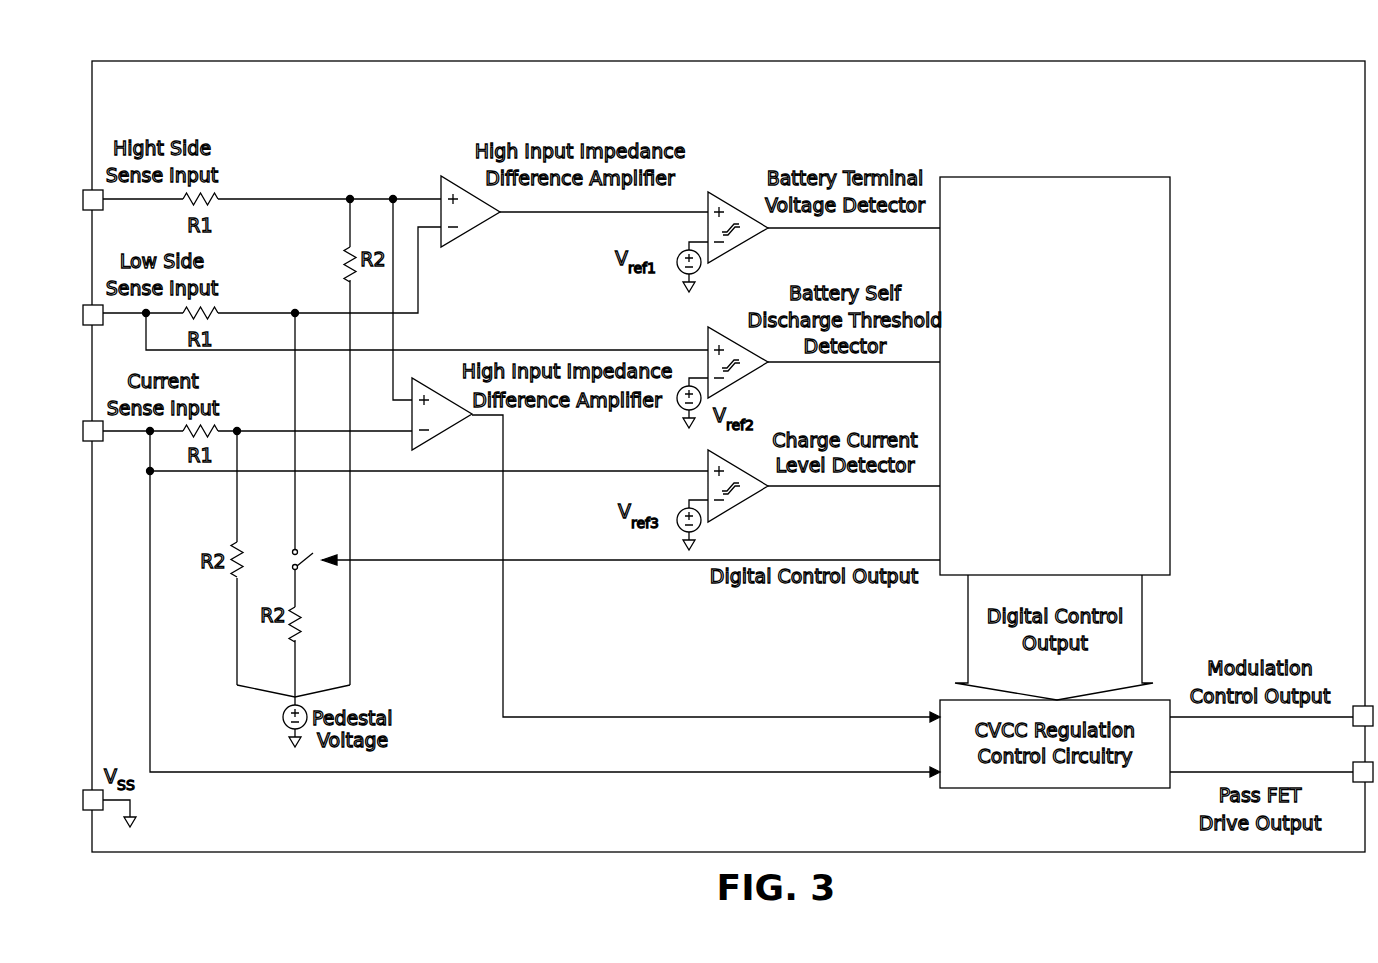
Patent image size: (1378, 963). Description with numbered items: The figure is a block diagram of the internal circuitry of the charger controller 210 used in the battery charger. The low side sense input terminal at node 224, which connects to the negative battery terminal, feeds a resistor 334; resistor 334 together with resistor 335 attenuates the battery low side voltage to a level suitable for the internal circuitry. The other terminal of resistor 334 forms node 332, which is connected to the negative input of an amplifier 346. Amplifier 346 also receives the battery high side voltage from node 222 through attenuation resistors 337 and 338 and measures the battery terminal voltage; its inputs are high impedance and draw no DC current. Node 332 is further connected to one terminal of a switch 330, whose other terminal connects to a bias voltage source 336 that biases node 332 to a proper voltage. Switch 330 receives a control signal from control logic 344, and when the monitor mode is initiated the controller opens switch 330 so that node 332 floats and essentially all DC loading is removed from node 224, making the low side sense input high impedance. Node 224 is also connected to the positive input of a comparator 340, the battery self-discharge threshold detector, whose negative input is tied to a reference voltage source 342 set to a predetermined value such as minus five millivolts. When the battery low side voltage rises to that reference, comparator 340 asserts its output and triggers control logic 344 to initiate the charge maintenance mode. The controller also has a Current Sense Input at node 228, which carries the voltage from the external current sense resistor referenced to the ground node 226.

The charger controller 210 is at (1047, 60).
The node 222 is at (82, 193).
The node 224 is at (82, 306).
The ground node 226 is at (82, 790).
The node 228 is at (82, 422).
The switch 330 is at (301, 565).
The node 332 is at (298, 548).
The resistor 334 is at (222, 307).
The resistor 335 is at (289, 640).
The bias voltage source 336 is at (282, 720).
The attenuation resistor 337 is at (220, 193).
The attenuation resistor 338 is at (348, 254).
The comparator 340 is at (702, 338).
The reference voltage source 342 is at (682, 407).
The control logic 344 is at (1038, 251).
The amplifier 346 is at (474, 238).